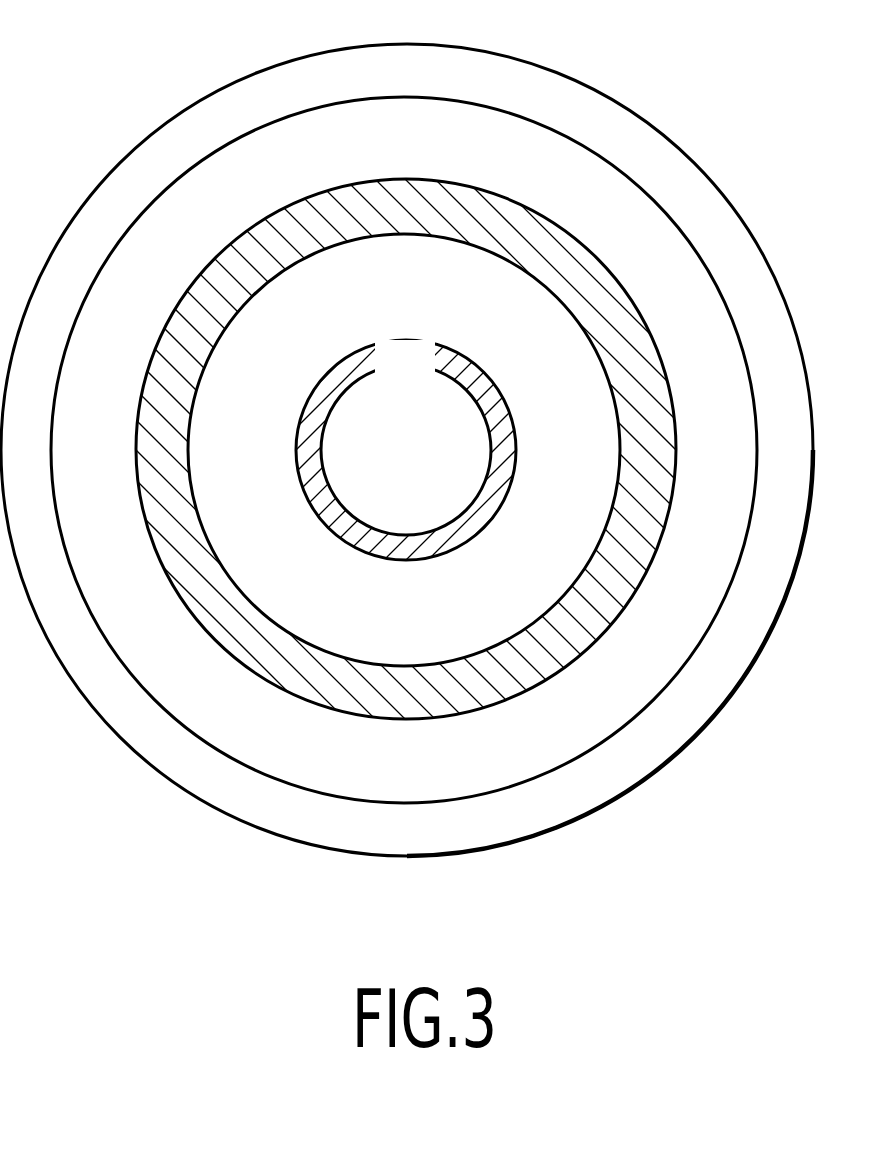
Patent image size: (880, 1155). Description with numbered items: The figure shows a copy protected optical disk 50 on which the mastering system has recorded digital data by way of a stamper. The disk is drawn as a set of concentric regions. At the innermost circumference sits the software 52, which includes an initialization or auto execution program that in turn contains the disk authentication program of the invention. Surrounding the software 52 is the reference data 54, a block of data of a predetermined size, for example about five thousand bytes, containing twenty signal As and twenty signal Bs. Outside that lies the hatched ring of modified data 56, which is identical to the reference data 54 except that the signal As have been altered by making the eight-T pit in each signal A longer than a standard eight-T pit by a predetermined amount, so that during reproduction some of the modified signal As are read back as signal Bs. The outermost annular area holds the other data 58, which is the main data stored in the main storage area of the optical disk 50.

The optical disk 50 is at (570, 80).
The software 52 is at (505, 408).
The reference data 54 is at (493, 315).
The modified data 56 is at (553, 227).
The other data 58 is at (741, 442).